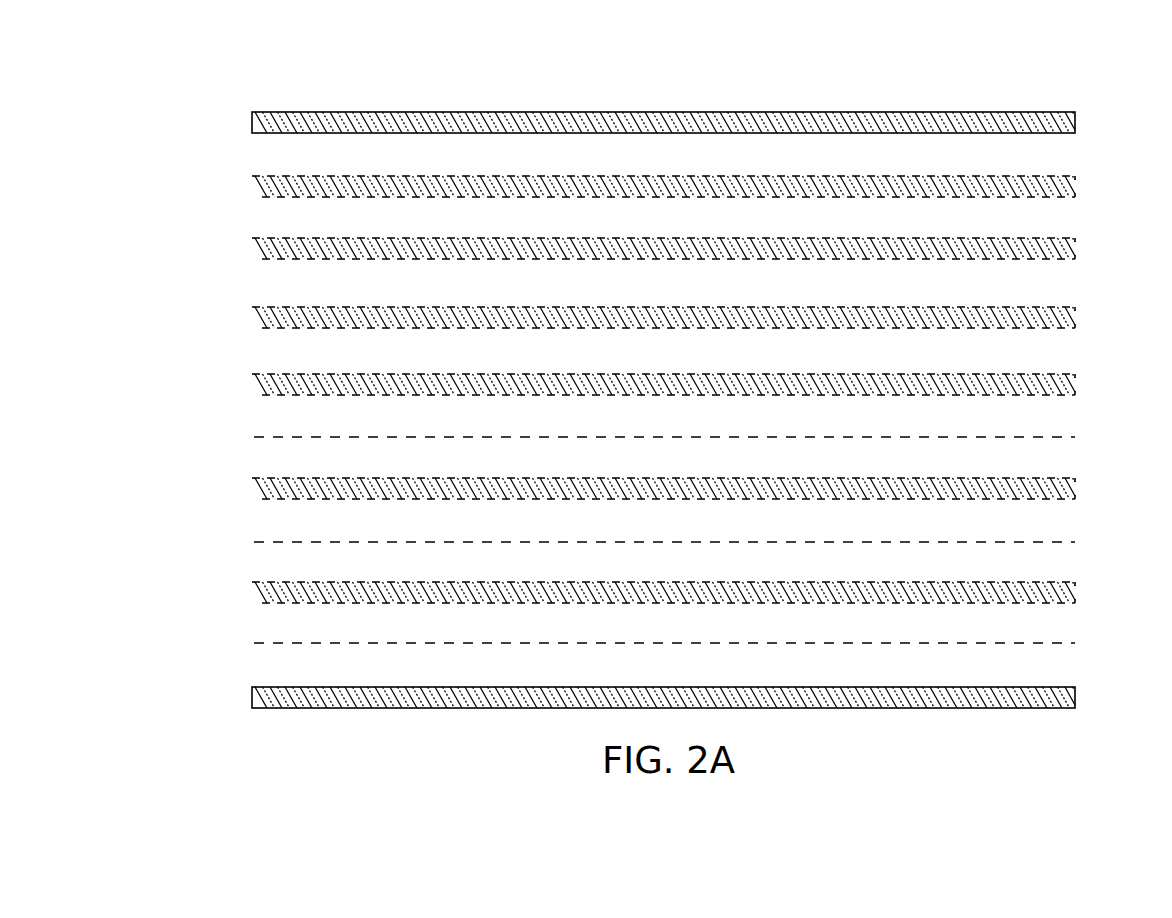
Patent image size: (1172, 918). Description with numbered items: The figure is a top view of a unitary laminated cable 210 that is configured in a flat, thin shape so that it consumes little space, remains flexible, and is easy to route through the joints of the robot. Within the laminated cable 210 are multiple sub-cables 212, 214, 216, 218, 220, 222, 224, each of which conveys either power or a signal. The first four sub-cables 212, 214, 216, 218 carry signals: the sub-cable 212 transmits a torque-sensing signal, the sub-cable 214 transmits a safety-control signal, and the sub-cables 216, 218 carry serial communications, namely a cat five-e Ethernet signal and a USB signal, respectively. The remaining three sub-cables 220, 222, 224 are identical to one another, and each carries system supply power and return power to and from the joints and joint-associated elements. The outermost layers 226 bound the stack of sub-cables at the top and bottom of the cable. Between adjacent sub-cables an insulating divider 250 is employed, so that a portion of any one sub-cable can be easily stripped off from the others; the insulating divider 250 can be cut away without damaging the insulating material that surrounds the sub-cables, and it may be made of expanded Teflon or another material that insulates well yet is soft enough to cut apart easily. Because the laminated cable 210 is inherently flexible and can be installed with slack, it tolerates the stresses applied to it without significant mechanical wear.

The unitary laminated cable 210 is at (289, 90).
The sub-cable 212 is at (1057, 158).
The sub-cable 214 is at (1057, 223).
The sub-cable 216 is at (1057, 285).
The sub-cable 218 is at (1057, 348).
The sub-cable 220 is at (694, 456).
The sub-cable 222 is at (694, 561).
The sub-cable 224 is at (695, 643).
The end plate 226 is at (1077, 114).
The insulating divider 250 is at (252, 186).